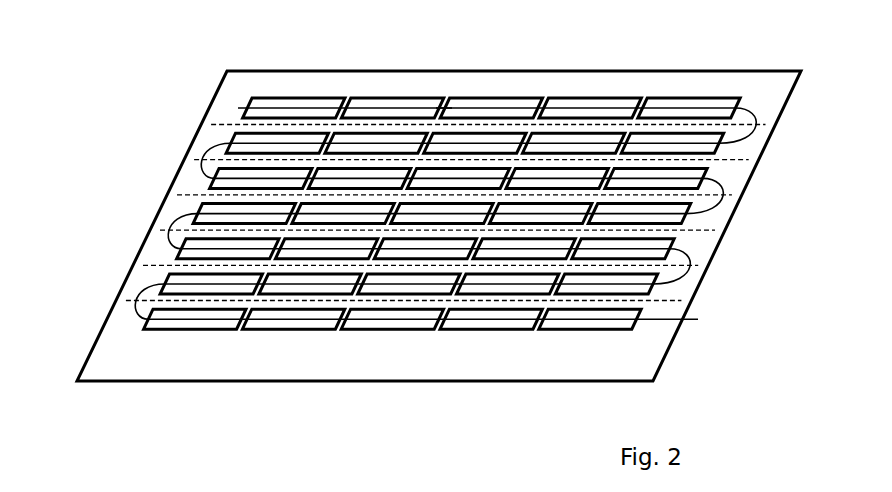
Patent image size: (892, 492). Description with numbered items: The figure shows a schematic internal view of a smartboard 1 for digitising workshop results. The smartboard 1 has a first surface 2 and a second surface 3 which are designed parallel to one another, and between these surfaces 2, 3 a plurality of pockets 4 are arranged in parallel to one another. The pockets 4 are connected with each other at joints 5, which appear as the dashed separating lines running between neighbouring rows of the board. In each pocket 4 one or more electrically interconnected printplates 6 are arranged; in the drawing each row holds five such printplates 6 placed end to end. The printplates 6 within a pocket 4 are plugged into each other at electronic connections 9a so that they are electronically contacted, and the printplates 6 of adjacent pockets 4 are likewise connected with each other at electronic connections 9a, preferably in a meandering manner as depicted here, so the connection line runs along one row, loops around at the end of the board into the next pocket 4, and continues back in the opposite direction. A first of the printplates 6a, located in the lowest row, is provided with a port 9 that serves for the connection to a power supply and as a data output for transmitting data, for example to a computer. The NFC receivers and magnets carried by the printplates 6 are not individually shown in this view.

The smartboard 1 is at (103, 115).
The first surface 2 is at (772, 90).
The second surface 3 is at (439, 226).
The pocket 4 is at (725, 178).
The joint 5 is at (725, 235).
The printplate 6 is at (710, 103).
The first printplate 6a is at (615, 322).
The port 9 is at (688, 315).
The electronic connection 9a is at (443, 104).